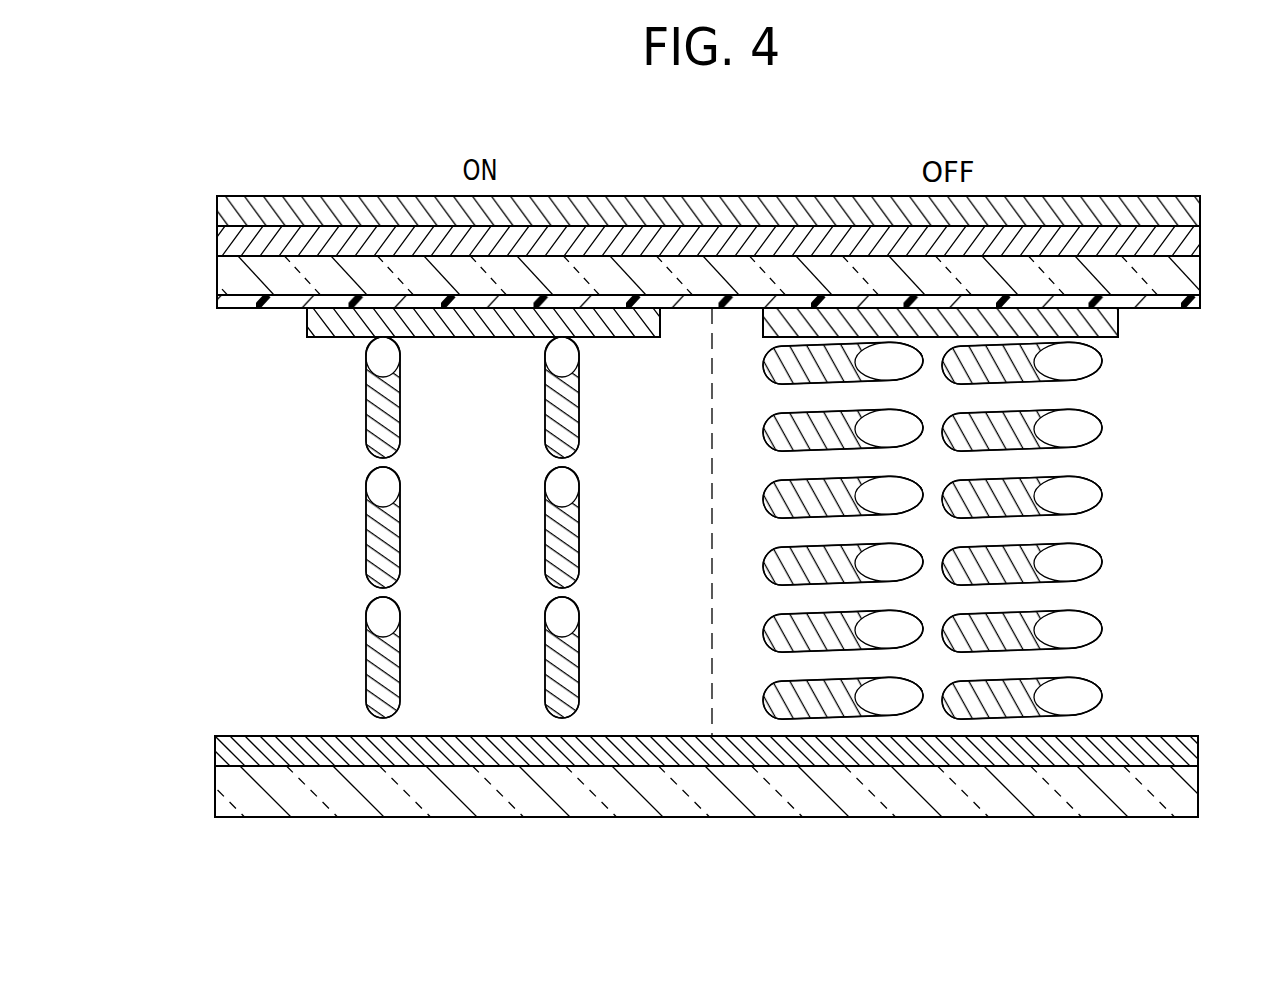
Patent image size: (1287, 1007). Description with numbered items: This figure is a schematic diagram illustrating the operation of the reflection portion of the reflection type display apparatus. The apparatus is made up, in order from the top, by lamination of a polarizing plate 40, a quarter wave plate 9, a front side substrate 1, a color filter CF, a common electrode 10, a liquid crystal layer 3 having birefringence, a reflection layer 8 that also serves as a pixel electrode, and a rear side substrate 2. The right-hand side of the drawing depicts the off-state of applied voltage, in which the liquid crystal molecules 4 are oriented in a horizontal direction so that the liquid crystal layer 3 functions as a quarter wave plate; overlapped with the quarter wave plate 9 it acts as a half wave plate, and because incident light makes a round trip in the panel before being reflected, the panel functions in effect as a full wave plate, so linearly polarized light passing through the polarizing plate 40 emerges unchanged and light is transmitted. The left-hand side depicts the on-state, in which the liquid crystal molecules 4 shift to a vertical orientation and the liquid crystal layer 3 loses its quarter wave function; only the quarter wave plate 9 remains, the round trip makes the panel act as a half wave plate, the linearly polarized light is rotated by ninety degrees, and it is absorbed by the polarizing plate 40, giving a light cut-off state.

The polarizing plate 40 is at (1199, 215).
The quarter wave plate 9 is at (1190, 247).
The front side substrate 1 is at (1183, 280).
The color filter CF is at (226, 302).
The common electrode 10 is at (312, 328).
The liquid crystal molecules 4 is at (382, 483).
The liquid crystal layer 3 is at (1142, 528).
The reflection layer 8 is at (1178, 755).
The rear side substrate 2 is at (1178, 792).